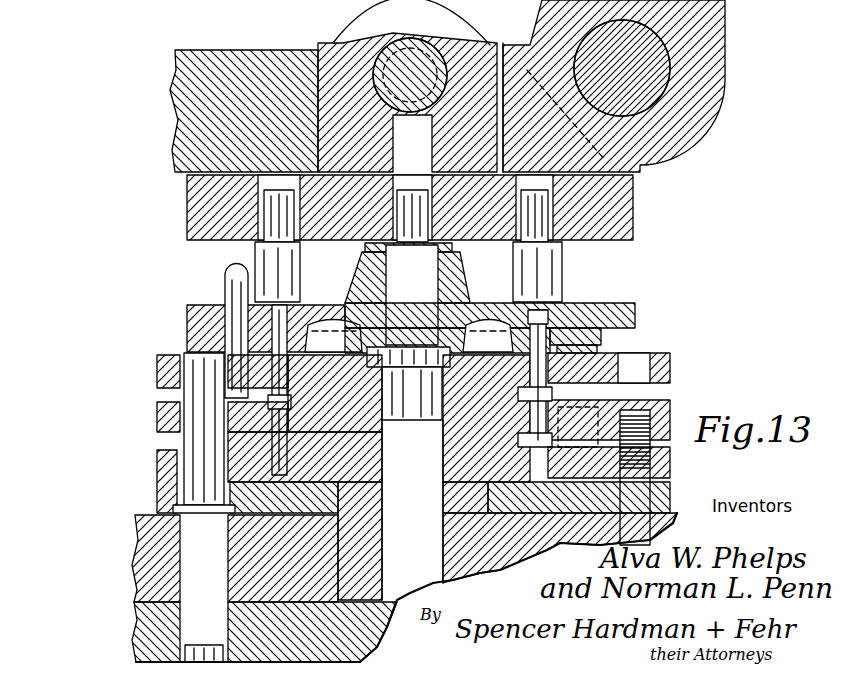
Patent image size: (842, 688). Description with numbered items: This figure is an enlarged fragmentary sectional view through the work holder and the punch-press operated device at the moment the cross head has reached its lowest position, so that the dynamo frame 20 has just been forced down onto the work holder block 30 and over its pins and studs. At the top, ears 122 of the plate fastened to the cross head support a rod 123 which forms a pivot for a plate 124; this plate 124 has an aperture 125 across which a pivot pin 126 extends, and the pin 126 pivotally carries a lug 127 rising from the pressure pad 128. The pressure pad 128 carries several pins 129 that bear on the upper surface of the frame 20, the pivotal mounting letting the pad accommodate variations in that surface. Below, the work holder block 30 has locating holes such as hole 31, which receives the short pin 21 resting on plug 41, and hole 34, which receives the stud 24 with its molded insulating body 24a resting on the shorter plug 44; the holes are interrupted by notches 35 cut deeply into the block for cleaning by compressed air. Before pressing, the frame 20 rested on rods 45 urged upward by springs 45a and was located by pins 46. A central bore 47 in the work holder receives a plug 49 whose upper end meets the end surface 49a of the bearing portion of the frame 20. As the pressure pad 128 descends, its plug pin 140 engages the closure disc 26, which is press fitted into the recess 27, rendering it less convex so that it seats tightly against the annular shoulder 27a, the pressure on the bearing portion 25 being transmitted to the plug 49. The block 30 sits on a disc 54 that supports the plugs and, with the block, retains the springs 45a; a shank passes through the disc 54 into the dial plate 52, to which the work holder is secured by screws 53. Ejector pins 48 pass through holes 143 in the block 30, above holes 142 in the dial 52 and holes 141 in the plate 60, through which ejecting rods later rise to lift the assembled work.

The dynamo frame 20 is at (625, 303).
The pin 21 is at (187, 318).
The stud 24 is at (495, 432).
The cylindrical insulating body 24a is at (515, 306).
The aperture 25 is at (375, 298).
The disc 26 is at (445, 235).
The recess 27 is at (418, 258).
The annular shoulder 27a is at (372, 265).
The work holder block 30 is at (157, 360).
The hole 31 is at (272, 375).
The hole 34 is at (490, 455).
The notch 35 is at (170, 438).
The plug 41 is at (192, 443).
The plug 44 is at (480, 478).
The rod 45 is at (598, 350).
The spring 45a is at (655, 402).
The pin 46 is at (235, 290).
The central bore 47 is at (430, 578).
The ejector pin 48 is at (187, 400).
The plug 49 is at (404, 422).
The end surface 49a is at (447, 345).
The dial plate 52 is at (135, 590).
The screw 53 is at (640, 515).
The disc 54 is at (665, 497).
The plate 60 is at (150, 620).
The ear 122 is at (700, 20).
The rod 123 is at (652, 62).
The plate 124 is at (190, 118).
The aperture 125 is at (318, 50).
The pivot pin 126 is at (457, 33).
The lug 127 is at (345, 68).
The pressure pad 128 is at (187, 208).
The pin 129 is at (258, 255).
The plug pin 140 is at (410, 195).
The hole 141 is at (180, 638).
The hole 142 is at (185, 557).
The hole 143 is at (175, 490).